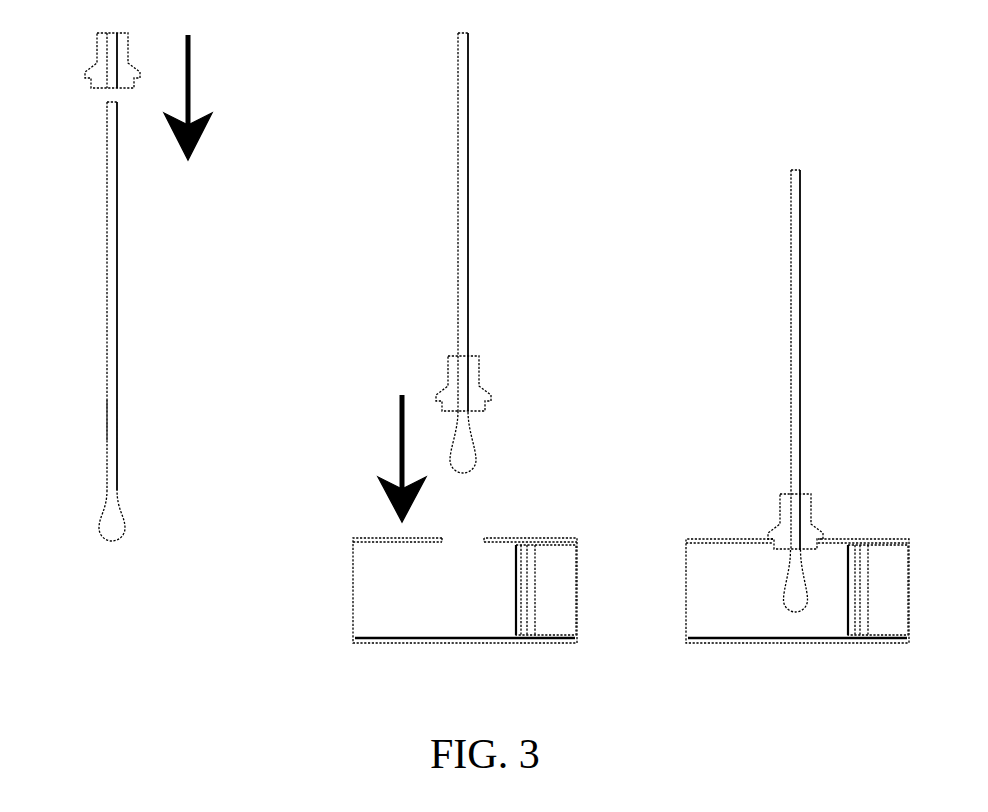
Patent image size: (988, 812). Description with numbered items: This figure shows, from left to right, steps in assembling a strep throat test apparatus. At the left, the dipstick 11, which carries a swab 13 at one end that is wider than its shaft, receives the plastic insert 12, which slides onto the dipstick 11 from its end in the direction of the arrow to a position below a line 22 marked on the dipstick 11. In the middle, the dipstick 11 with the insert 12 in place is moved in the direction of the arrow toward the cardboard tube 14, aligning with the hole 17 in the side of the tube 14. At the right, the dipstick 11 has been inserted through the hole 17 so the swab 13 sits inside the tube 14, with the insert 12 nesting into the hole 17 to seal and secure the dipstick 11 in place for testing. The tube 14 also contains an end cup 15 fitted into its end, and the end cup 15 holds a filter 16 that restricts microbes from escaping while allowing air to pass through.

The dipstick 11 is at (107, 250).
The insert 12 is at (97, 52).
The swab 13 is at (104, 510).
The line 22 is at (110, 420).
The tube 14 is at (370, 537).
The end cup 15 is at (553, 548).
The filter 16 is at (535, 600).
The hole 17 is at (460, 540).